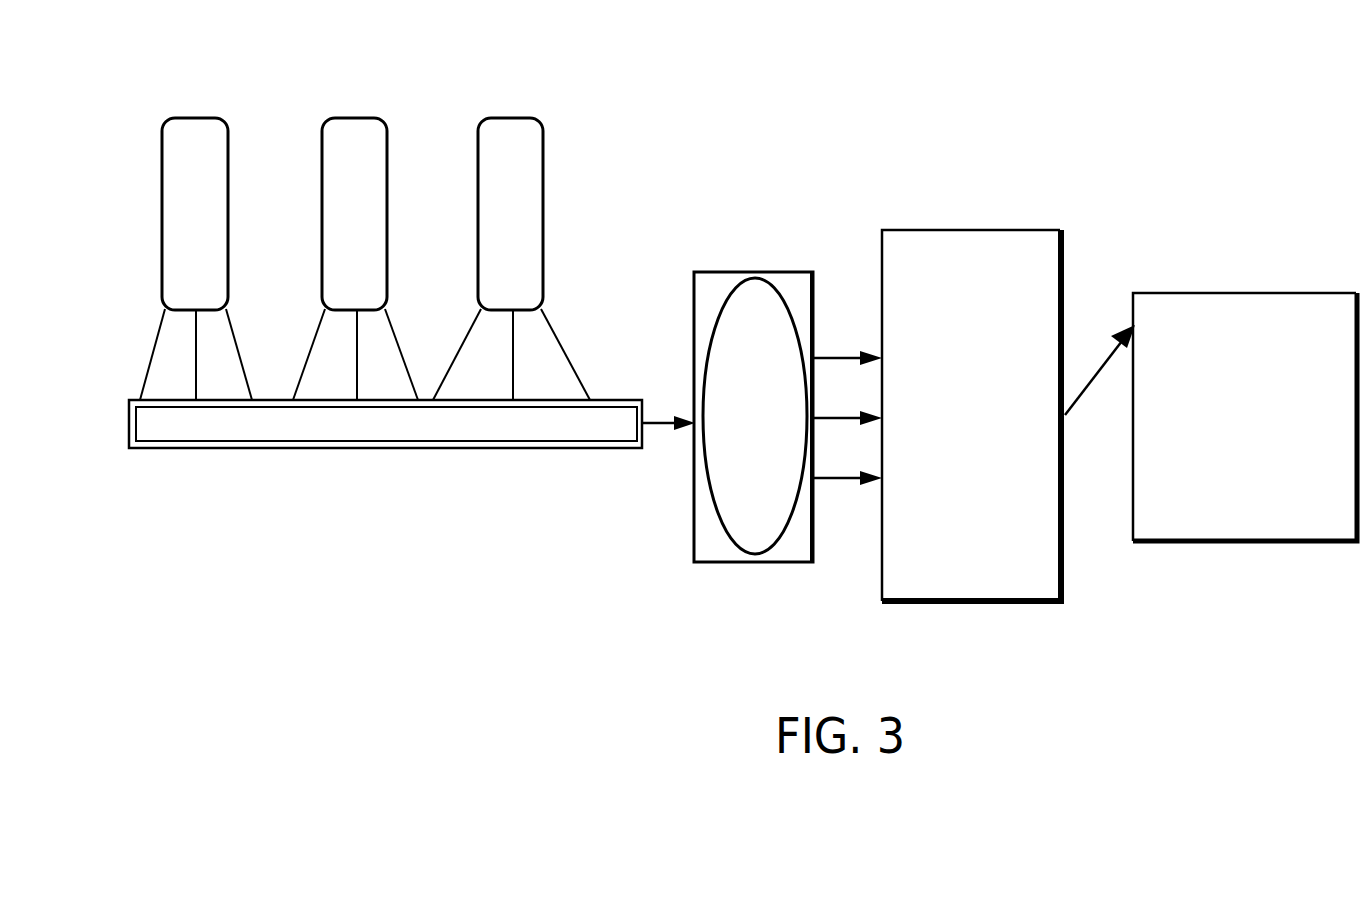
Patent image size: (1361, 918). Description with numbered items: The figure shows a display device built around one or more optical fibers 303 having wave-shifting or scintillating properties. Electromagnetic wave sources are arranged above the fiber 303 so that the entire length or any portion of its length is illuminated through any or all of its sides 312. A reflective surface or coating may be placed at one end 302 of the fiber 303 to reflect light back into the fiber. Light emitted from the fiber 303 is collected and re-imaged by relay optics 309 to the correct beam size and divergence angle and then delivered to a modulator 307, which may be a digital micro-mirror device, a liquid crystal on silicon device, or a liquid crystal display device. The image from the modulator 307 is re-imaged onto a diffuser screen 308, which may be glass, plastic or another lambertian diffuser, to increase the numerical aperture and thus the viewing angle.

The end of the fiber 302 is at (128, 421).
The optical fiber 303 is at (386, 424).
The sides of the fiber 312 is at (383, 450).
The relay optics 309 is at (780, 272).
The modulator 307 is at (950, 230).
The diffuser screen 308 is at (1236, 293).